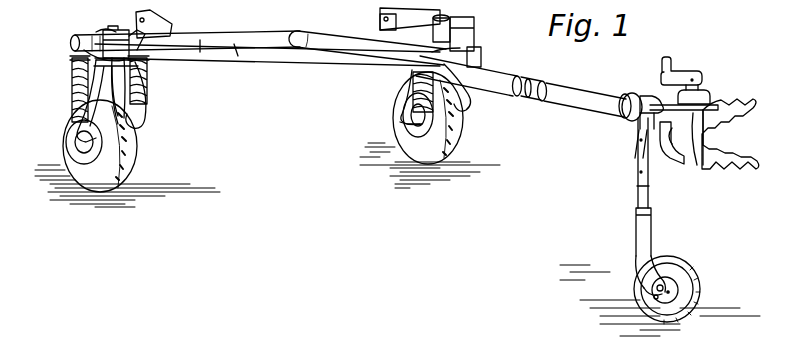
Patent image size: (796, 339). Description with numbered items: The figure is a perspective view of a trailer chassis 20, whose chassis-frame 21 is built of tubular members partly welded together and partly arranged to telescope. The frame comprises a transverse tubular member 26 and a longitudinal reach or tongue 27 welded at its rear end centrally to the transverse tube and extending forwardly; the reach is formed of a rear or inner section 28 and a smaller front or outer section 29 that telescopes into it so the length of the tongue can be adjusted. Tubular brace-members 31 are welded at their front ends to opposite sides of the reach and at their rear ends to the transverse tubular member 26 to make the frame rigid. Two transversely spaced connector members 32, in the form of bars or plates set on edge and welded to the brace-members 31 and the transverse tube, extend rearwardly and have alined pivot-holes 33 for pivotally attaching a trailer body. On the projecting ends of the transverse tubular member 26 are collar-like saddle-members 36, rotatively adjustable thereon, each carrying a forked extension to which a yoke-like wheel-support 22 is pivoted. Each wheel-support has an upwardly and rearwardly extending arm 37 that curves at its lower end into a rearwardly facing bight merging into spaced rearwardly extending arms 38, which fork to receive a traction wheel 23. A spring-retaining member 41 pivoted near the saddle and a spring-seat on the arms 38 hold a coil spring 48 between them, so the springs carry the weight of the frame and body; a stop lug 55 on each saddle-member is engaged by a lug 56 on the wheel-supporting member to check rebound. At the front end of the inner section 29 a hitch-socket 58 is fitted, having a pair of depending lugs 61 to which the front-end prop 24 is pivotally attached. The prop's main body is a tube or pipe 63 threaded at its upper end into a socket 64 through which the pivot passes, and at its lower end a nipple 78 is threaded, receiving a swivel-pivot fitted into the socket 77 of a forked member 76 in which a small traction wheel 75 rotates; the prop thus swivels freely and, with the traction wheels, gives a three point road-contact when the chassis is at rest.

The chassis 20 is at (246, 30).
The chassis-frame 21 is at (294, 65).
The wheel-support 22 is at (152, 113).
The traction wheel 23 is at (124, 154).
The front-end prop 24 is at (636, 190).
The transverse tubular member 26 is at (345, 34).
The reach or tongue 27 is at (542, 80).
The rear or inner section of reach 28 is at (493, 78).
The front or outer section of reach 29 is at (588, 98).
The tubular brace-member 31 is at (244, 54).
The connector member 32 is at (172, 24).
The pivot-hole 33 is at (134, 24).
The collar-like saddle-member 36 is at (116, 32).
The upwardly and rearwardly extending arm 37 is at (138, 79).
The rearwardly extending arm 38 is at (68, 142).
The spring-retaining member 41 is at (70, 58).
The coil spring 48 is at (72, 90).
The stop lug 55 is at (162, 20).
The lug 56 is at (84, 50).
The hitch-socket 58 is at (632, 96).
The depending lug 61 is at (636, 133).
The tube or pipe 63 is at (650, 177).
The socket 64 is at (638, 148).
The small traction wheel 75 is at (698, 286).
The forked member 76 is at (642, 272).
The socket 77 is at (652, 231).
The nipple 78 is at (636, 218).